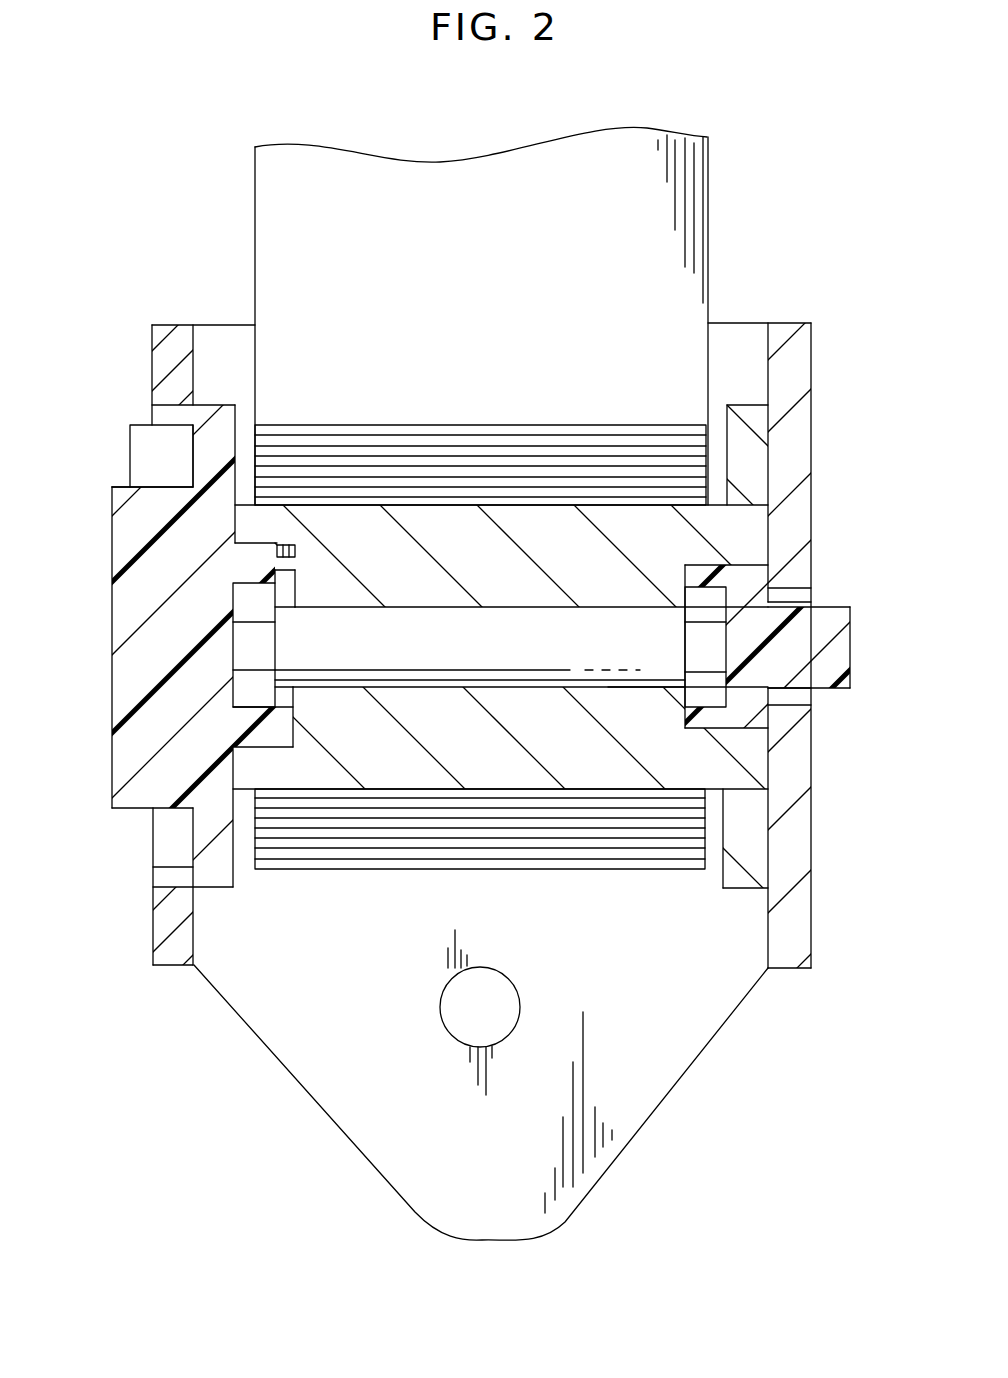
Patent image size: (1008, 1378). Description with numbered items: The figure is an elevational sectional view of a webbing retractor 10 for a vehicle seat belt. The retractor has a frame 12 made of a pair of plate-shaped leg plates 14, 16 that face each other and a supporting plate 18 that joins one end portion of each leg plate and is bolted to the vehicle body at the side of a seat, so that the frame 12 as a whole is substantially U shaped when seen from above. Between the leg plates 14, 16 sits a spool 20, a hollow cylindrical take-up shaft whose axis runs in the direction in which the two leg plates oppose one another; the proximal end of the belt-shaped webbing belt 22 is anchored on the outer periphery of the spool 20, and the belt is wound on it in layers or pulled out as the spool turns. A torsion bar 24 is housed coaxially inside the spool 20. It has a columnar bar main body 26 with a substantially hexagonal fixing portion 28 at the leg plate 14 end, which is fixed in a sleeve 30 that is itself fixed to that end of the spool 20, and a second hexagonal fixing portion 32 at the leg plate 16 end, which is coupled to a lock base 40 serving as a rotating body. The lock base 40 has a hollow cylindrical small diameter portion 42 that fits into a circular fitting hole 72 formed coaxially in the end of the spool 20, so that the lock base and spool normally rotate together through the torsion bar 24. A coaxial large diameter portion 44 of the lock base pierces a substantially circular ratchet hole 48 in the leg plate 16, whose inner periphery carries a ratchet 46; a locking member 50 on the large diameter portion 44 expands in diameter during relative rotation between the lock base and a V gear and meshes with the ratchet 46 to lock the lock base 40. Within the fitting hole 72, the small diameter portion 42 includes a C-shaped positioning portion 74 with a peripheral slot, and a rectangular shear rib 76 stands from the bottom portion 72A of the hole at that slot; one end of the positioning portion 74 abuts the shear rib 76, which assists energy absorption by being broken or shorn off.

The webbing retractor 10 is at (736, 192).
The frame 12 is at (742, 318).
The leg plate 14 is at (787, 928).
The leg plate 16 is at (153, 924).
The supporting plate 18 is at (280, 1013).
The spool 20 is at (519, 868).
The webbing belt 22 is at (255, 235).
The torsion bar 24 is at (452, 690).
The bar main body 26 is at (607, 690).
The fixing portion 28 is at (717, 640).
The sleeve 30 is at (843, 607).
The fixing portion 32 is at (268, 748).
The lock base 40 is at (110, 663).
The small diameter portion 42 is at (255, 710).
The large diameter portion 44 is at (130, 810).
The ratchet 46 is at (182, 432).
The ratchet hole 48 is at (173, 413).
The locking member 50 is at (160, 478).
The fitting hole 72 is at (272, 562).
The bottom portion 72A is at (280, 607).
The positioning portion 74 is at (280, 707).
The shear rib 76 is at (285, 552).